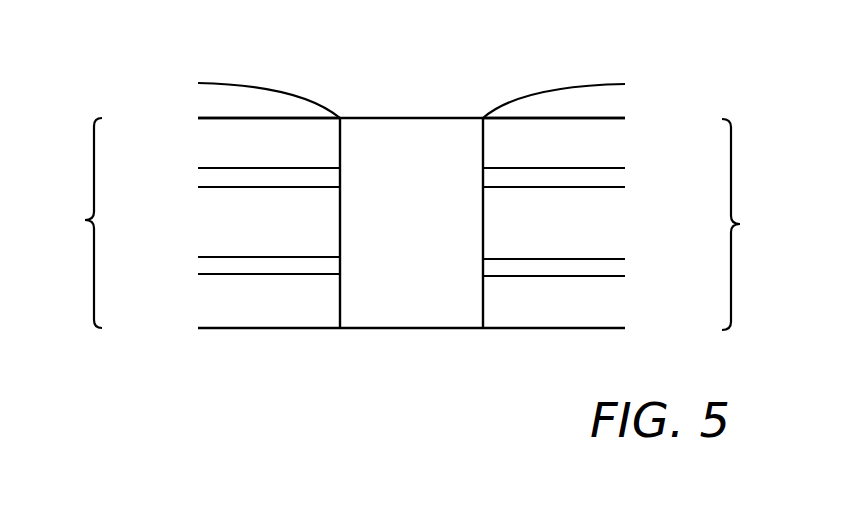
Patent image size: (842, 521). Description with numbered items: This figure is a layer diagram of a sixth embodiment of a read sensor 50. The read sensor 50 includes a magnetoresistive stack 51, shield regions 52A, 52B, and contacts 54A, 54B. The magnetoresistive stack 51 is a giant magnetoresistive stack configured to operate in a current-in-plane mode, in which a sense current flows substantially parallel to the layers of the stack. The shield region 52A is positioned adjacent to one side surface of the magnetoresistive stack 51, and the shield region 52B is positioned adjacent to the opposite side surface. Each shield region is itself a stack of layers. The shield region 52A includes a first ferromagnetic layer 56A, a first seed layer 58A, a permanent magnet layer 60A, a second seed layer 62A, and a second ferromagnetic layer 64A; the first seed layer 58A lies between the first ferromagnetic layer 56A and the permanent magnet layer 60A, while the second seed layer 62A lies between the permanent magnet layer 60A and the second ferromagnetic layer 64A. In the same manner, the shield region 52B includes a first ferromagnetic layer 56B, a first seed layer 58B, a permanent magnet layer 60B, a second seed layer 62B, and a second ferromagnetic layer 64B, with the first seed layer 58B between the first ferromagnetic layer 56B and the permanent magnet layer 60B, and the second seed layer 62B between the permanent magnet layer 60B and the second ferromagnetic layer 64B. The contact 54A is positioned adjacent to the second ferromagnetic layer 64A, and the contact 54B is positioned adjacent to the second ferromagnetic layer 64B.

The read sensor 50 is at (281, 49).
The magnetoresistive stack 51 is at (377, 135).
The shield region 52A is at (67, 223).
The shield region 52B is at (757, 224).
The contact 54A is at (218, 100).
The contact 54B is at (608, 102).
The first ferromagnetic layer 56A is at (225, 300).
The first ferromagnetic layer 56B is at (612, 306).
The first seed layer 58A is at (225, 266).
The first seed layer 58B is at (612, 268).
The permanent magnet layer 60A is at (220, 221).
The permanent magnet layer 60B is at (607, 224).
The second seed layer 62A is at (218, 177).
The second seed layer 62B is at (603, 177).
The second ferromagnetic layer 64A is at (218, 151).
The second ferromagnetic layer 64B is at (603, 145).